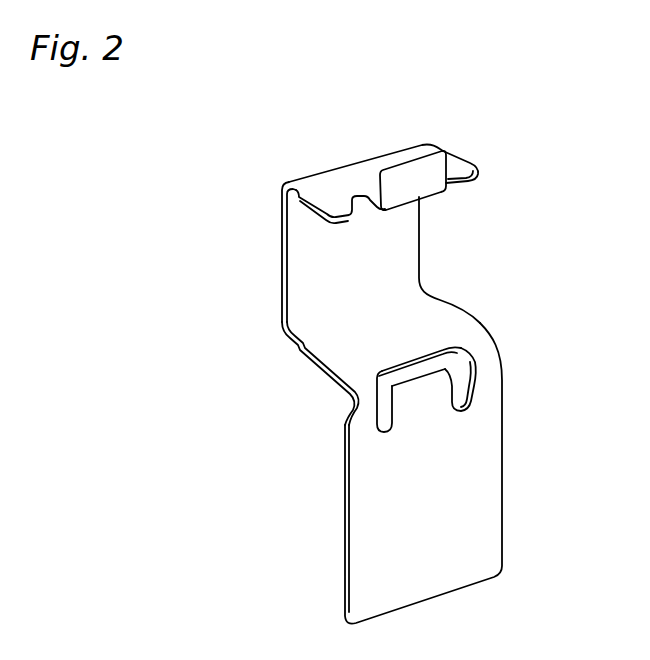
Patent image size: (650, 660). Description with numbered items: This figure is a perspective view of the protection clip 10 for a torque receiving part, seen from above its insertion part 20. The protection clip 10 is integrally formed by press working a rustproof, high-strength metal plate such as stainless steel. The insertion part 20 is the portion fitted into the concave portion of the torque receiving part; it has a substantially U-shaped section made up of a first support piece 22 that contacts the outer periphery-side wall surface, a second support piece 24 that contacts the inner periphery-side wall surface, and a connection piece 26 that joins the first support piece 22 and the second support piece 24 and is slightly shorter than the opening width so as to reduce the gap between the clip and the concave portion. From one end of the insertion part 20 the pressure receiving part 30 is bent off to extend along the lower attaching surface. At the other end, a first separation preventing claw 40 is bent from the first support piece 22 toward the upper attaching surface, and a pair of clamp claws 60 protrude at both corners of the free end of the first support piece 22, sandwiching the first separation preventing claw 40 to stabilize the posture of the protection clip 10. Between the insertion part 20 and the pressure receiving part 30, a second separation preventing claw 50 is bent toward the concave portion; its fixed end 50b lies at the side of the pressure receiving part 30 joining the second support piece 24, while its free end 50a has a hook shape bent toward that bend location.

The protection clip 10 is at (398, 118).
The insertion part 20 is at (247, 248).
The first support piece 22 is at (363, 173).
The second support piece 24 is at (340, 348).
The connection piece 26 is at (320, 246).
The pressure receiving part 30 is at (457, 522).
The first separation preventing claw 40 is at (413, 183).
The second separation preventing claw 50 is at (427, 392).
The free end 50a is at (432, 360).
The fixed end 50b is at (413, 420).
The clamp claw 60 is at (328, 205).